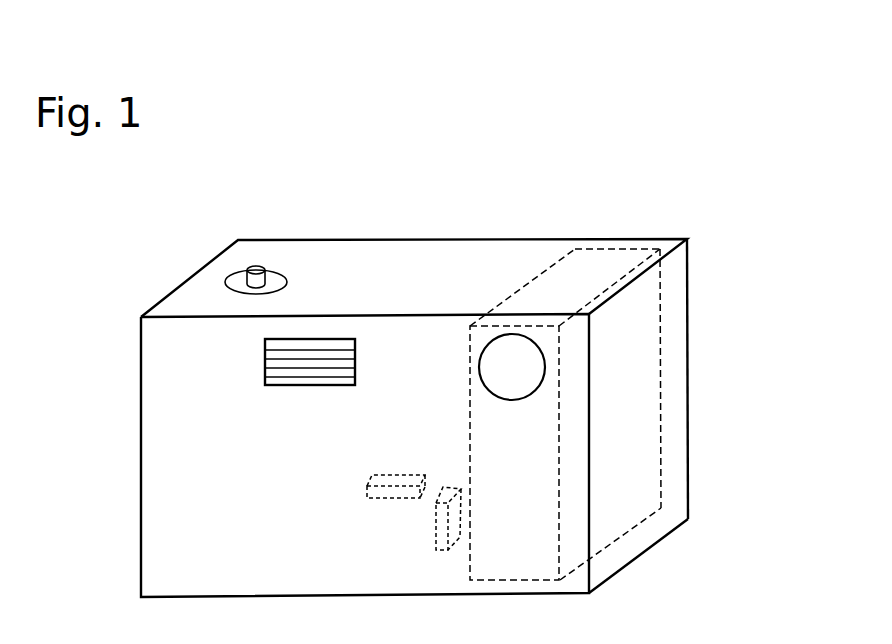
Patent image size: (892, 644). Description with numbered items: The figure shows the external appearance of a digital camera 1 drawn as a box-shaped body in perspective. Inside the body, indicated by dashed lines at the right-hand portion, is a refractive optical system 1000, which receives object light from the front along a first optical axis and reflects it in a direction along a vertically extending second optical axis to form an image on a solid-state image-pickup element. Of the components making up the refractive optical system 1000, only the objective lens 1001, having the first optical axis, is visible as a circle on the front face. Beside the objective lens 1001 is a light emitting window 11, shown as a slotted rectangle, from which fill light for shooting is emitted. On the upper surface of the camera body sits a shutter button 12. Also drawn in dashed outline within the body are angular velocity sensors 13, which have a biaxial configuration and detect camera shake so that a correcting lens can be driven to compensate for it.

The digital camera 1 is at (471, 126).
The light emitting window 11 is at (310, 362).
The shutter button 12 is at (256, 268).
The angular velocity sensors 13 is at (433, 528).
The refractive optical system 1000 is at (593, 263).
The objective lens 1001 is at (512, 368).